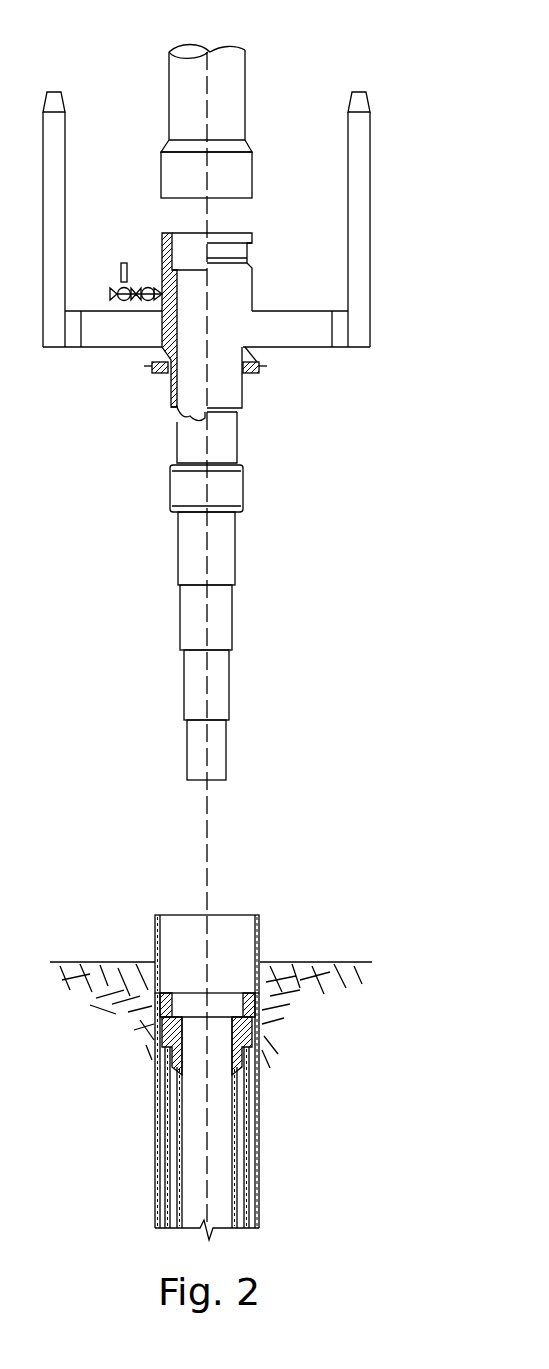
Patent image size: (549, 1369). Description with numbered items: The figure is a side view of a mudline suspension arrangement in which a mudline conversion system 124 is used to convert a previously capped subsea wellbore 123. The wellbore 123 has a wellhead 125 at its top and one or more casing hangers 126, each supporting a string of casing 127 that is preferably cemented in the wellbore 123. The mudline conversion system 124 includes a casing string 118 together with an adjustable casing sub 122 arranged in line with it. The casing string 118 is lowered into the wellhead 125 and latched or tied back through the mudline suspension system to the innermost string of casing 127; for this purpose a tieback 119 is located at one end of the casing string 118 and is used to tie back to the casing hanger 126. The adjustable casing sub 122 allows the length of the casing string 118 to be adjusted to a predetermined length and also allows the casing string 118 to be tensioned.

The mudline conversion system 124 is at (343, 53).
The wellhead 125 is at (390, 223).
The adjustable casing sub 122 is at (245, 485).
The casing string 118 is at (230, 696).
The tieback 119 is at (227, 750).
The casing hanger 126 is at (265, 1037).
The string of casing 127 is at (237, 1150).
The wellbore 123 is at (218, 1202).